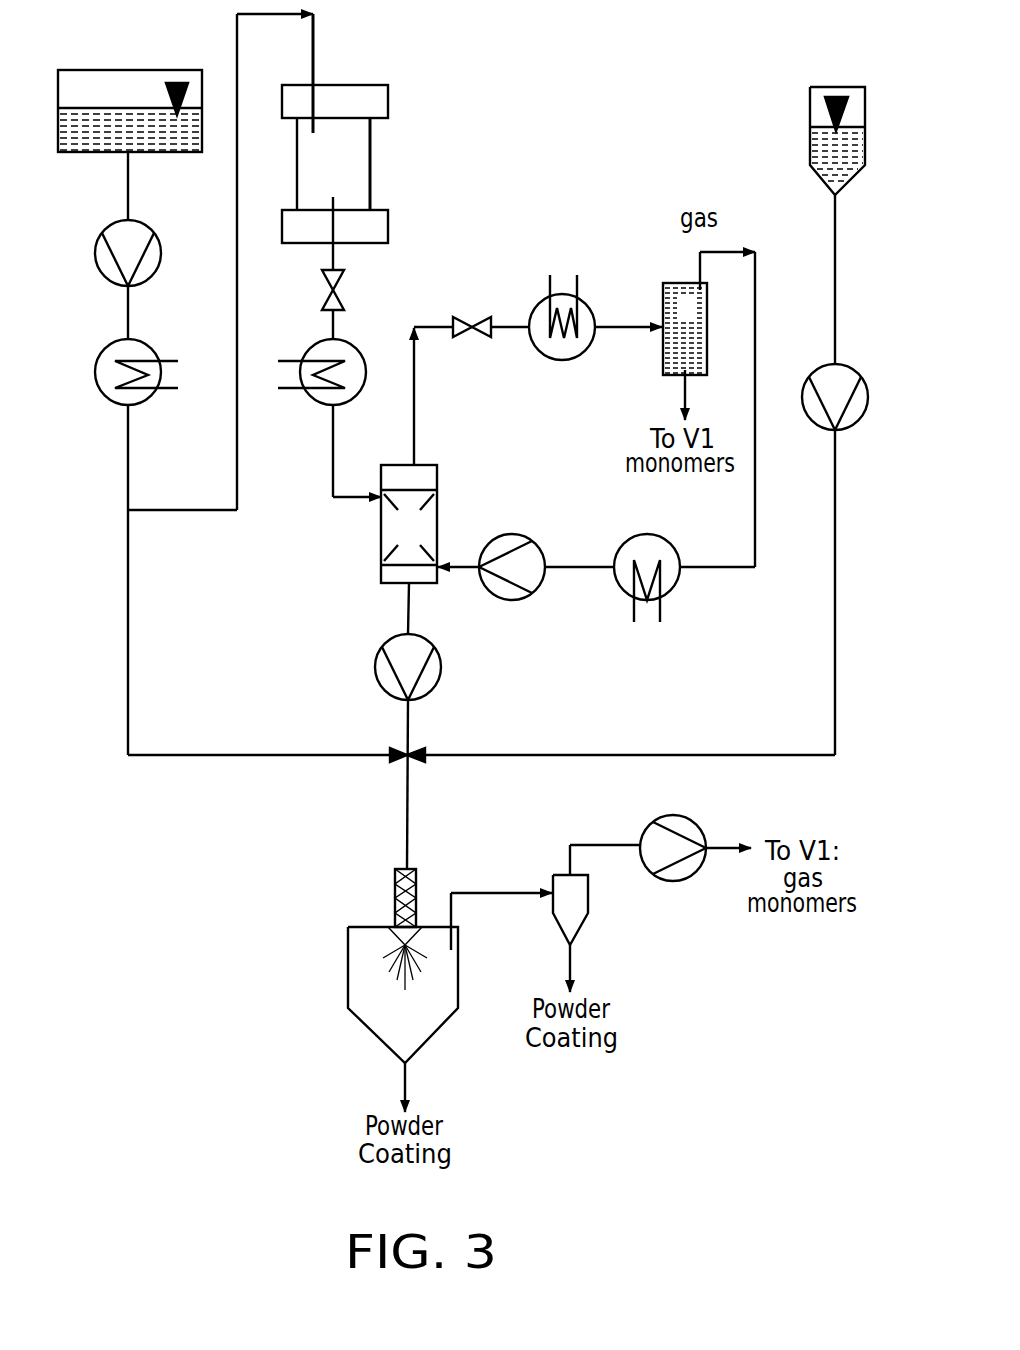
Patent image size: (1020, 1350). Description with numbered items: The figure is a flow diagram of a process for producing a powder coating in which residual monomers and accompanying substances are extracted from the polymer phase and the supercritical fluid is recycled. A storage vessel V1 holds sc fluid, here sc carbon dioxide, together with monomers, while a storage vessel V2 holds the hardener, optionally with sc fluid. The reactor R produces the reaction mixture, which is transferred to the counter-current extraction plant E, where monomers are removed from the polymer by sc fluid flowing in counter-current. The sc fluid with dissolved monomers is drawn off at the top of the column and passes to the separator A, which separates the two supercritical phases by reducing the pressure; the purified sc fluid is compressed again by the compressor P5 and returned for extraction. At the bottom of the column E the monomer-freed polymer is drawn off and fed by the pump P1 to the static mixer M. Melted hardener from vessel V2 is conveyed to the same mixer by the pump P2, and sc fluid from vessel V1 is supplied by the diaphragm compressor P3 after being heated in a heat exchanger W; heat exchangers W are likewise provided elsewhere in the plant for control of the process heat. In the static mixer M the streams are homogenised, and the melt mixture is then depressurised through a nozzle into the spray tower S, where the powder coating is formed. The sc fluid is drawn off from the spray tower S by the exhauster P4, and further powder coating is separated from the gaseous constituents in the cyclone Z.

The storage vessel for sc fluid V1 is at (130, 111).
The storage vessel for hardener V2 is at (837, 126).
The pump P1 is at (424, 667).
The pump P2 is at (850, 397).
The diaphragm compressor P3 is at (144, 253).
The exhauster P4 is at (673, 864).
The compressor P5 is at (512, 581).
The heat exchanger W is at (387, 446).
The reactor R is at (335, 177).
The counter-current extraction plant E is at (409, 524).
The separator A is at (685, 329).
The static mixer M is at (391, 898).
The spray tower S is at (403, 978).
The cyclone Z is at (570, 910).